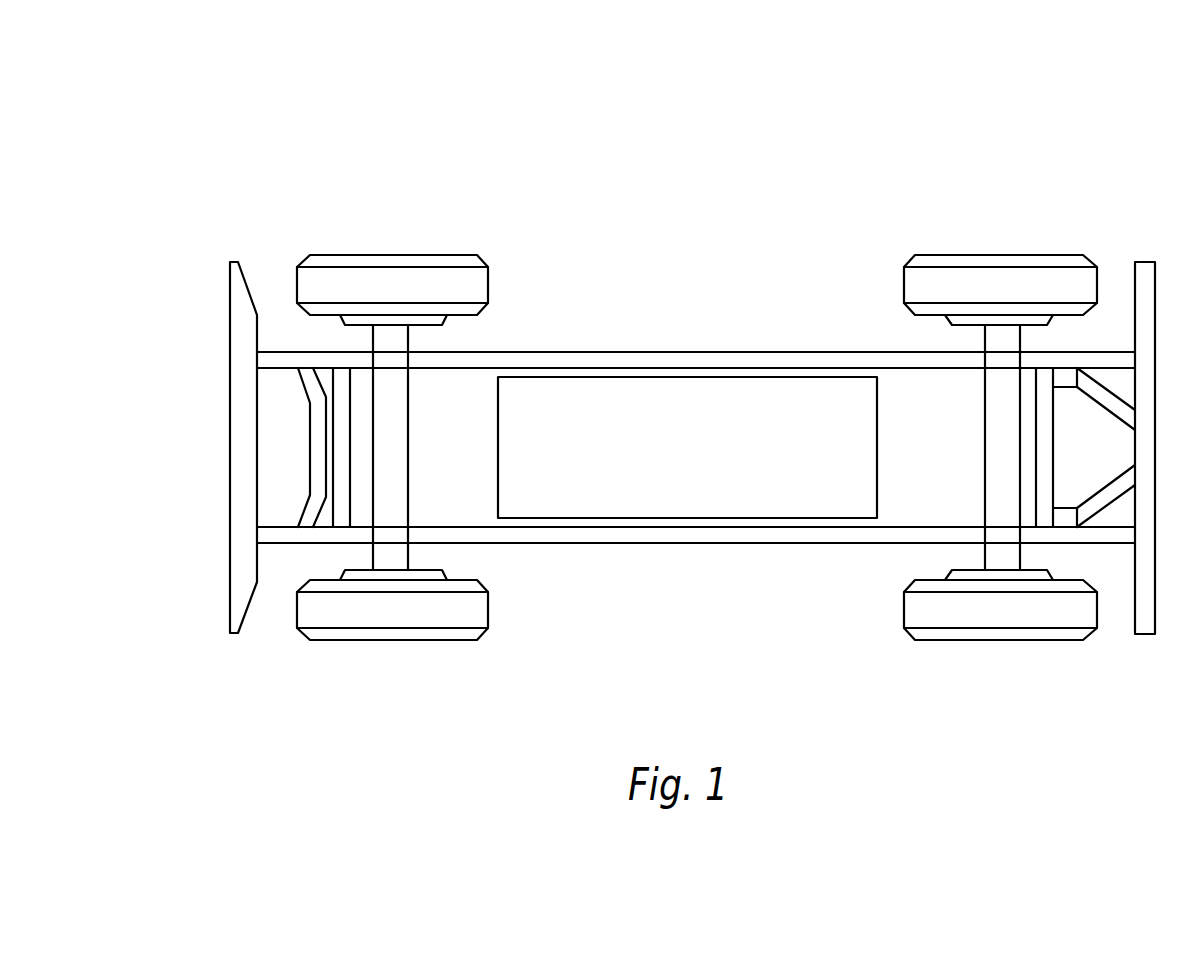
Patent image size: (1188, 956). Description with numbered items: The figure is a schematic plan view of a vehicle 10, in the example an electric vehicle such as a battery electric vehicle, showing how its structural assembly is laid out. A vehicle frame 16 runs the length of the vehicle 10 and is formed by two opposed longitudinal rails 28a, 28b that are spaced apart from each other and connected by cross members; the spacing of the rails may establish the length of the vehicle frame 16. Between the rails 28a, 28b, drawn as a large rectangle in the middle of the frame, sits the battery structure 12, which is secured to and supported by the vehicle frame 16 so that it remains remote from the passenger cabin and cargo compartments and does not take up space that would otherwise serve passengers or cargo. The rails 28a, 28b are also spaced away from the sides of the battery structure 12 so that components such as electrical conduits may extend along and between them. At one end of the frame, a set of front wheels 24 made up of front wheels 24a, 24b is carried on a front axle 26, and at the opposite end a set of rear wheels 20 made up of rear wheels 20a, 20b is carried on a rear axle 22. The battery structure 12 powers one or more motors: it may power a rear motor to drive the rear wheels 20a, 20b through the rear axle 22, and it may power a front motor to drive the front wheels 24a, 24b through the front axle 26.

The vehicle 10 is at (246, 126).
The battery structure 12 is at (656, 520).
The vehicle frame 16 is at (761, 311).
The set of rear wheels 20 is at (951, 220).
The rear wheel 20a is at (987, 617).
The rear wheel 20b is at (1030, 262).
The rear axle 22 is at (987, 488).
The set of front wheels 24 is at (374, 221).
The front wheel 24a is at (380, 613).
The front wheel 24b is at (458, 260).
The front axle 26 is at (395, 447).
The longitudinal rail 28a is at (623, 362).
The longitudinal rail 28b is at (747, 533).